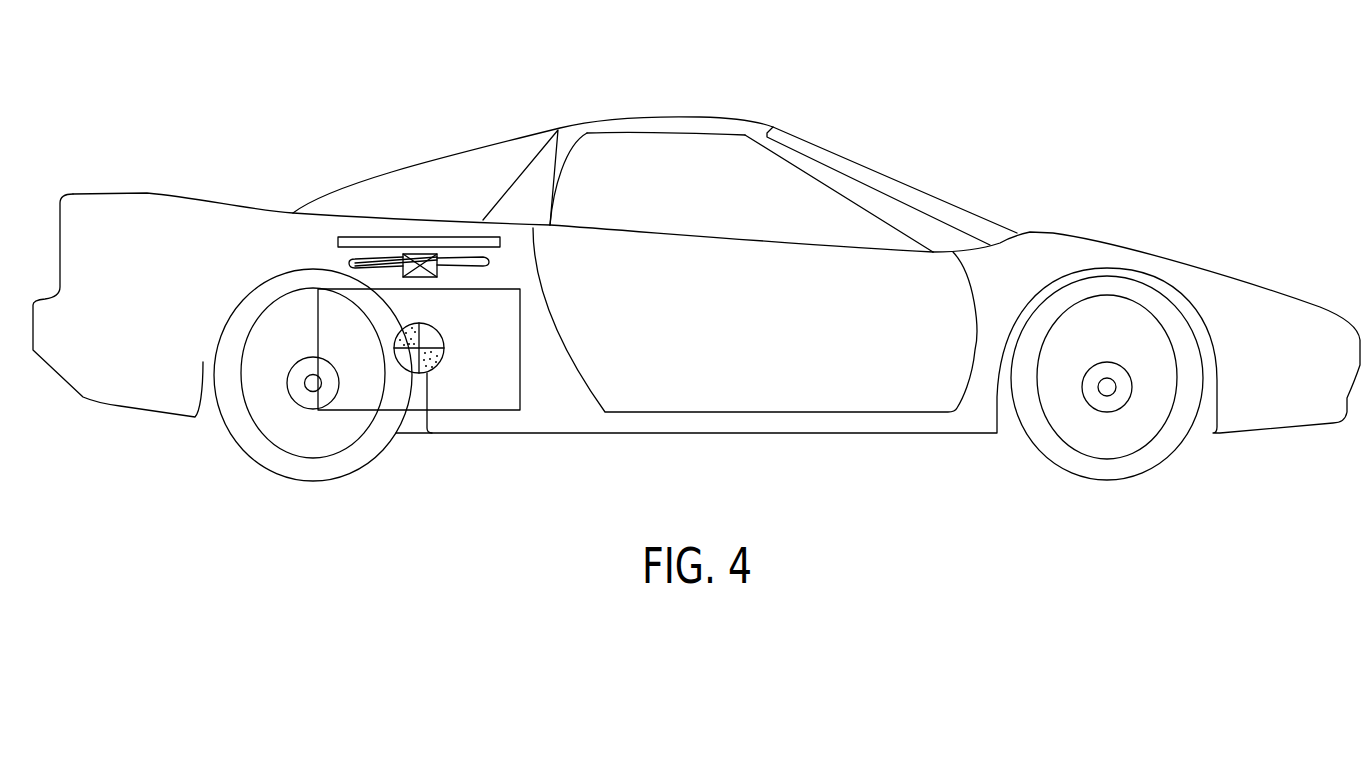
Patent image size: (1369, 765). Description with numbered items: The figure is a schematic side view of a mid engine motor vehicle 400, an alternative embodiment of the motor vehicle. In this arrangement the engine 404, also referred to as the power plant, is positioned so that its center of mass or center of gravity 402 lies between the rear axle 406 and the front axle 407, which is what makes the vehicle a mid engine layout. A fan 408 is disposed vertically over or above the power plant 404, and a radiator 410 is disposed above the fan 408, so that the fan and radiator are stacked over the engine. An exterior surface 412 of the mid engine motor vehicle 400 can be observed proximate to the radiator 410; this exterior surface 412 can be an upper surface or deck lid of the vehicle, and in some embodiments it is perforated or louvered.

The mid engine motor vehicle 400 is at (977, 120).
The center of gravity 402 is at (445, 373).
The engine 404 is at (522, 383).
The rear axle 406 is at (310, 390).
The front axle 407 is at (1110, 393).
The fan 408 is at (490, 263).
The radiator 410 is at (338, 243).
The exterior surface 412 is at (400, 218).